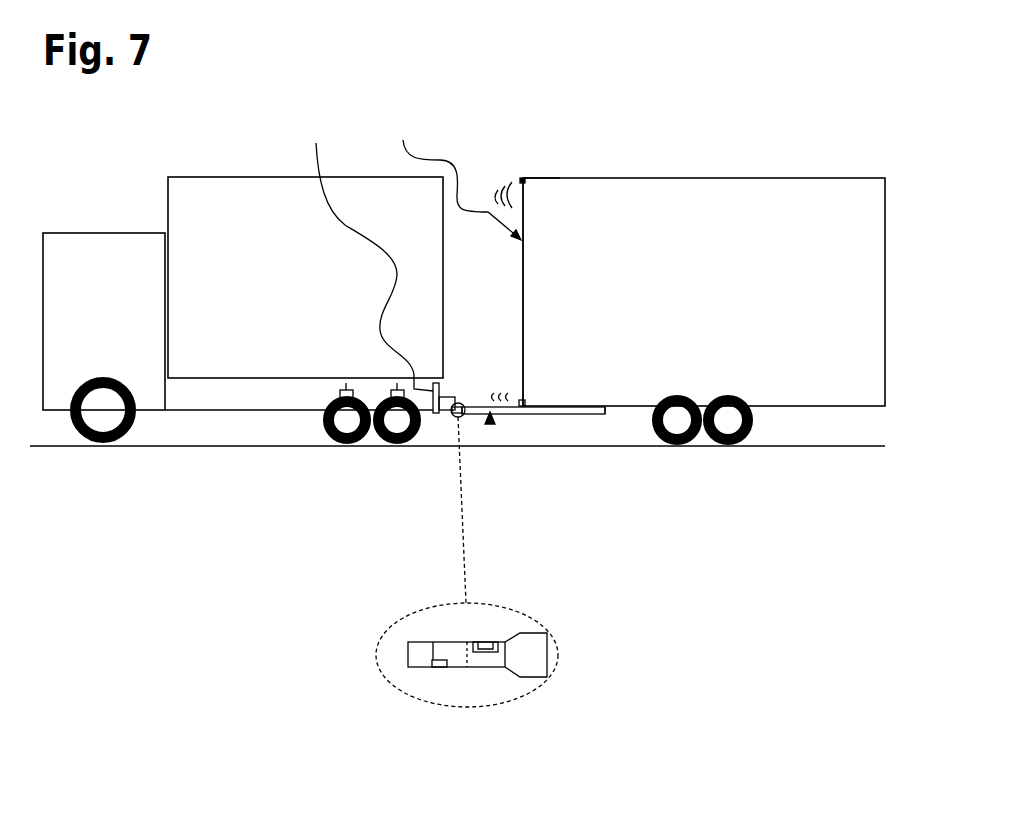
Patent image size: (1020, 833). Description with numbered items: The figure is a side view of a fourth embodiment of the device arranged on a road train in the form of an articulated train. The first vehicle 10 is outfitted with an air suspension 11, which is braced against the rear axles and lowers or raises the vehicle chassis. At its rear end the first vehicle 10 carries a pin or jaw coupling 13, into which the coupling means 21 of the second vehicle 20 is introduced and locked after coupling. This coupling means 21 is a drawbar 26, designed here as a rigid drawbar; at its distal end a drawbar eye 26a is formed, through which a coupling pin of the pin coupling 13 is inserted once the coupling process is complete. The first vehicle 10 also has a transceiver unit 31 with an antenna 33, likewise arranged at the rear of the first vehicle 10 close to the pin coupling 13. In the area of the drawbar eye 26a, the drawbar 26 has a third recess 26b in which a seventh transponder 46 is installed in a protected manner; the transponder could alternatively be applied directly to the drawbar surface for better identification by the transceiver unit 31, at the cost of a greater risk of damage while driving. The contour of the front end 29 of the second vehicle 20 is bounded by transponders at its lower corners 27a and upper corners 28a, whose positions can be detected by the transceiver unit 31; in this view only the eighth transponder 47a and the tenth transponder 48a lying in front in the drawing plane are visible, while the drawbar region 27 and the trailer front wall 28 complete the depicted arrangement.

The first vehicle 10 is at (94, 284).
The air suspension 11 is at (340, 392).
The pin coupling 13 is at (434, 414).
The second vehicle 20 is at (848, 226).
The coupling means 21 is at (492, 422).
The drawbar 26 is at (500, 415).
The drawbar eye 26a is at (442, 667).
The third recess 26b is at (498, 642).
The drawbar coupling 27 is at (598, 406).
The lower corners 27a is at (531, 406).
The trailer front wall 28 is at (655, 178).
The upper corners 28a is at (530, 178).
The front end 29 is at (455, 177).
The transceiver unit 31 is at (367, 255).
The antenna 33 is at (440, 398).
The seventh transponder 46 is at (462, 403).
The eighth transponder 47a is at (520, 402).
The tenth transponder 48a is at (521, 177).